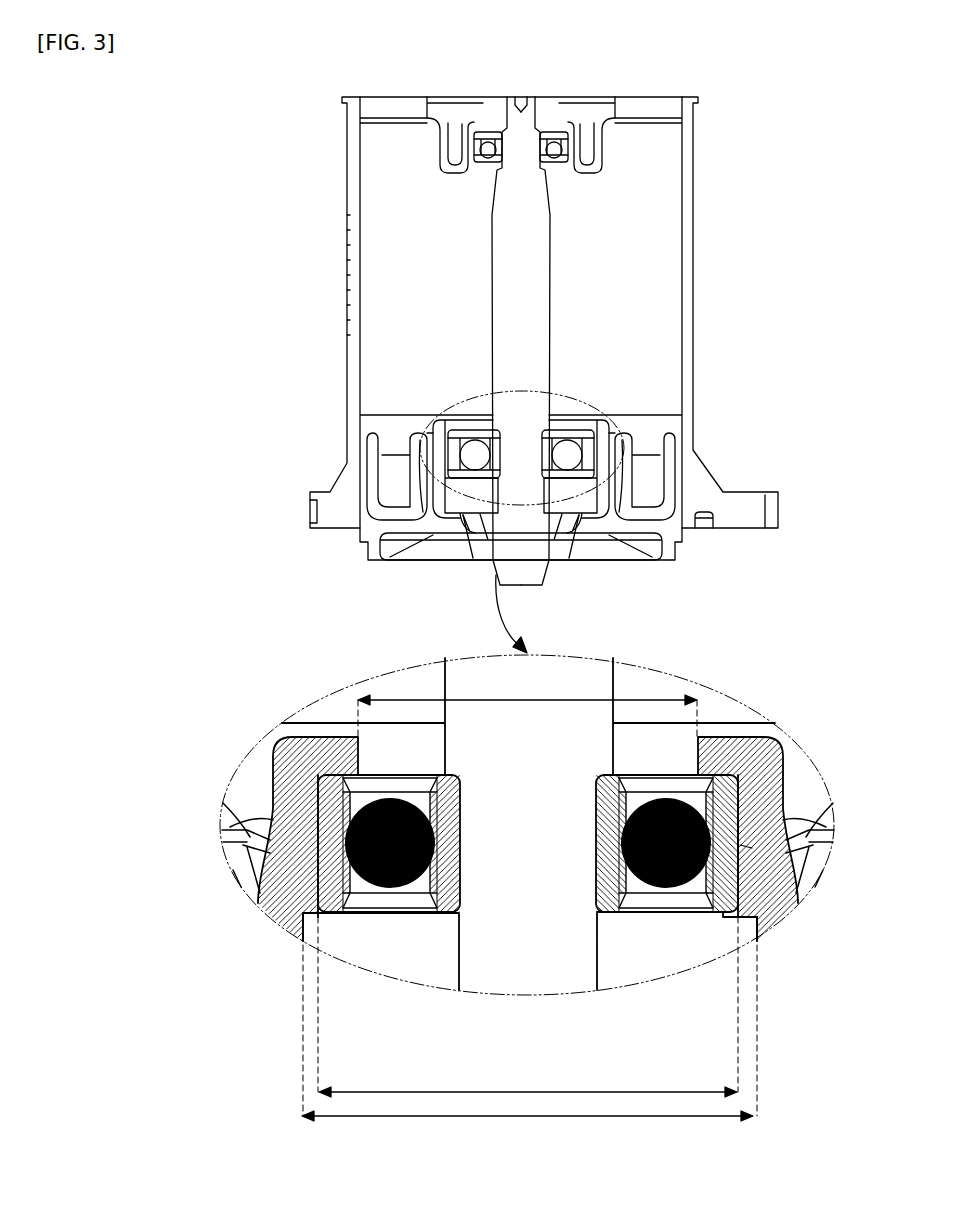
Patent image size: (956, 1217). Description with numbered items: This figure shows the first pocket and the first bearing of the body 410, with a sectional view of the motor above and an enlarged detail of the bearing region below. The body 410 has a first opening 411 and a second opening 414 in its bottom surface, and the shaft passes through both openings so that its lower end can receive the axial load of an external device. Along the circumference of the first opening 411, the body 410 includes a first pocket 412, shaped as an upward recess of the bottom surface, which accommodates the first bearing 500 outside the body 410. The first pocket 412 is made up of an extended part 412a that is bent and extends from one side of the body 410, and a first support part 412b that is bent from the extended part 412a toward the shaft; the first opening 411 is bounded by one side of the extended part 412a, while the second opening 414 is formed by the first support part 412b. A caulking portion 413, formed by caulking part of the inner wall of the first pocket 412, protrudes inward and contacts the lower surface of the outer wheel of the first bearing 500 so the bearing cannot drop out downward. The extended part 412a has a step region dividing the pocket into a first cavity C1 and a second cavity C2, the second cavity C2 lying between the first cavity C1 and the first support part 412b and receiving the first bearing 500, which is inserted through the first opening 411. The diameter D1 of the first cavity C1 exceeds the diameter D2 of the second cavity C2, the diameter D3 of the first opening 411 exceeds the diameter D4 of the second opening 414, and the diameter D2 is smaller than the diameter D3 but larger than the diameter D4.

The body 410 is at (358, 443).
The first opening 411 is at (410, 942).
The first pocket 412 is at (110, 822).
The extended part 412a is at (297, 795).
The first support part 412b is at (293, 755).
The caulking portion 413 is at (327, 913).
The second opening 414 is at (393, 757).
The first bearing 500 is at (450, 892).
The first cavity C1 is at (743, 942).
The second cavity C2 is at (747, 847).
The diameter of the first cavity D1 is at (672, 1118).
The diameter of the second cavity D2 is at (678, 1088).
The diameter of the first opening D3 is at (530, 1030).
The diameter of the second opening D4 is at (528, 704).